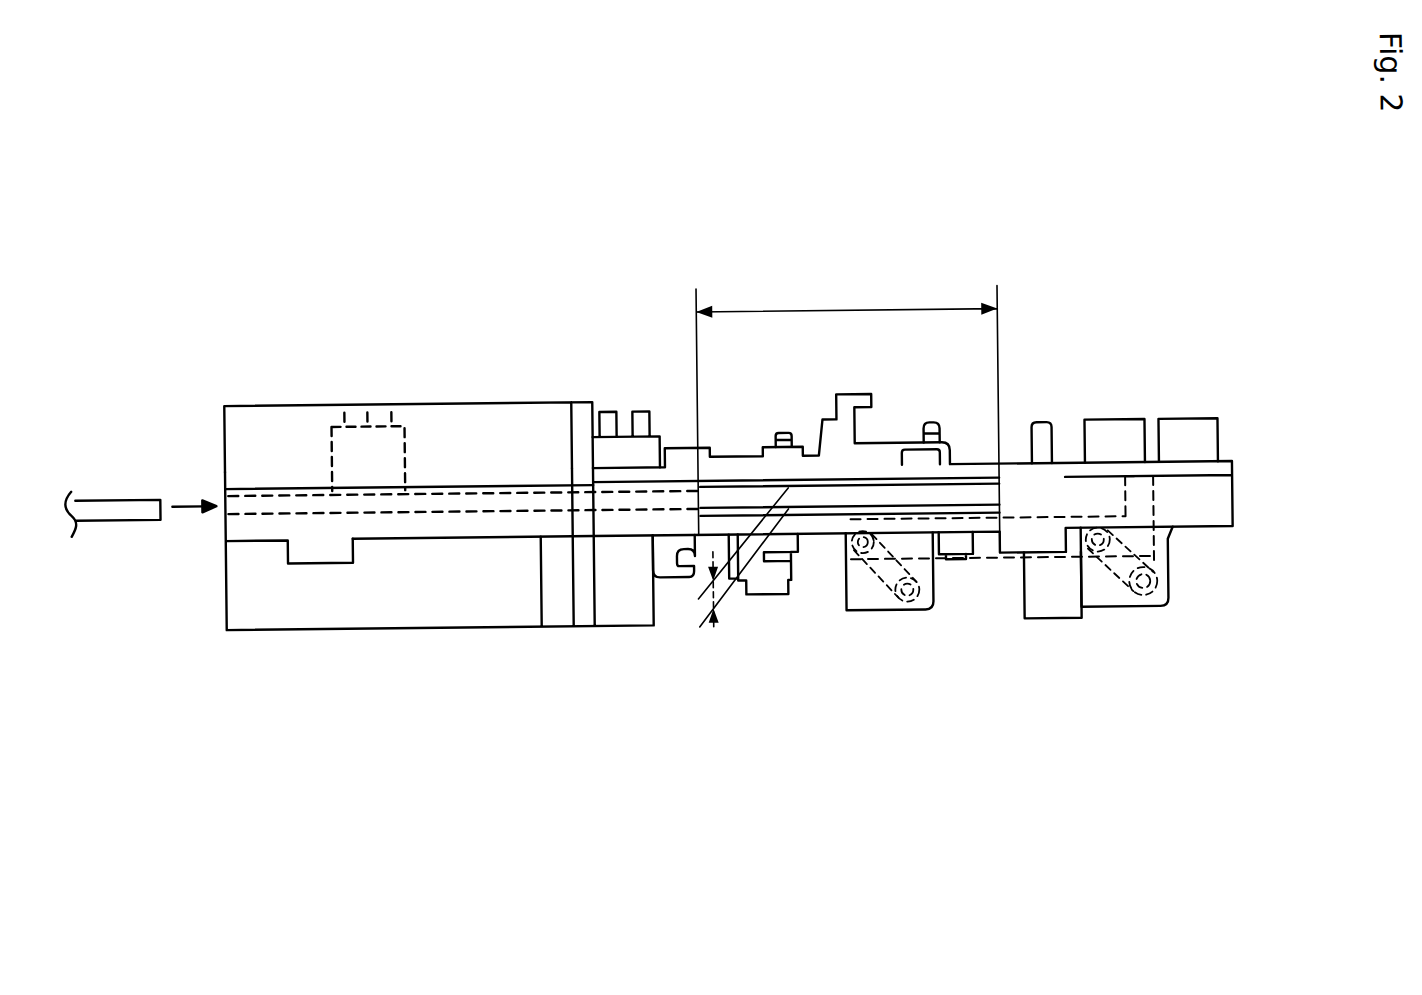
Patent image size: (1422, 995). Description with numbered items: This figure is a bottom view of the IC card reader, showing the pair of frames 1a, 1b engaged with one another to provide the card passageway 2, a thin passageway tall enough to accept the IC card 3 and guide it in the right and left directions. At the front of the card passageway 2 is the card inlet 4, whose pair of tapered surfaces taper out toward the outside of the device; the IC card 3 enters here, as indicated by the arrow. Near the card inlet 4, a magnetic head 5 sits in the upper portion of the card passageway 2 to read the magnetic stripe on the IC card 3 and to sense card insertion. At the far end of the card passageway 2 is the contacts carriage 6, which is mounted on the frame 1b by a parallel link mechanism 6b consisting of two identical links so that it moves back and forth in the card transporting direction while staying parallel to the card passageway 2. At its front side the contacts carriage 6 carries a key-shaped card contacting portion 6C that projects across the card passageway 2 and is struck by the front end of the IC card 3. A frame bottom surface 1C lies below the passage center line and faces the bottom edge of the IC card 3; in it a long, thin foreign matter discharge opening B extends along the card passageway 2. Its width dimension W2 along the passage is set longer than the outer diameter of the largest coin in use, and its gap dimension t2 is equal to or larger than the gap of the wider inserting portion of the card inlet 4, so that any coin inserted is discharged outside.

The frame 1a is at (473, 411).
The frame 1b is at (458, 627).
The frame bottom surface 1C is at (880, 478).
The card passageway 2 is at (556, 498).
The IC card 3 is at (117, 501).
The card inlet 4 is at (226, 514).
The magnetic head 5 is at (338, 486).
The contacts carriage 6 is at (984, 564).
The parallel link mechanism 6b is at (893, 606).
The key-shaped card contacting portion 6C is at (1157, 511).
The foreign matter discharge opening B is at (813, 497).
The width dimension W2 is at (848, 415).
The gap dimension t2 is at (726, 561).